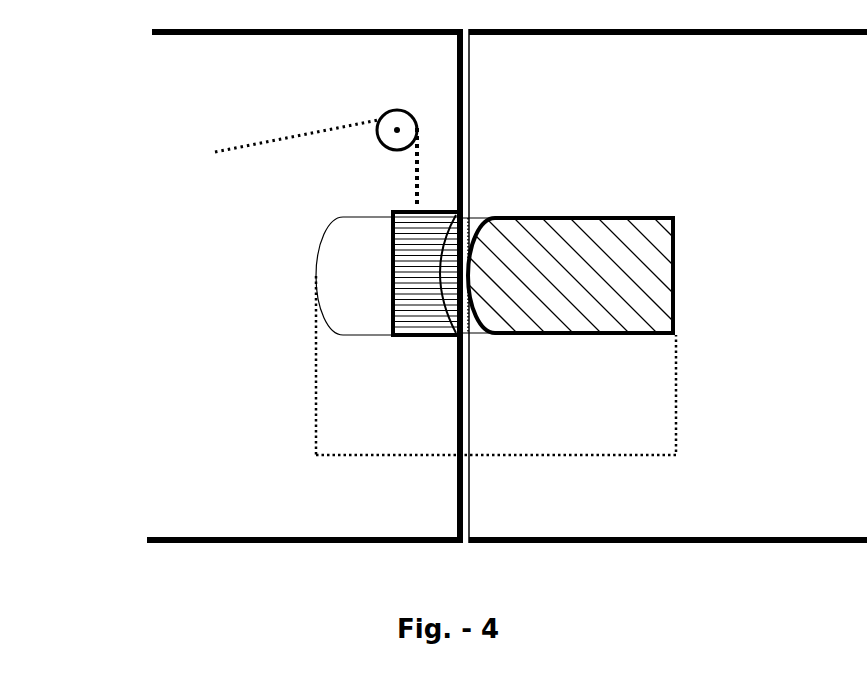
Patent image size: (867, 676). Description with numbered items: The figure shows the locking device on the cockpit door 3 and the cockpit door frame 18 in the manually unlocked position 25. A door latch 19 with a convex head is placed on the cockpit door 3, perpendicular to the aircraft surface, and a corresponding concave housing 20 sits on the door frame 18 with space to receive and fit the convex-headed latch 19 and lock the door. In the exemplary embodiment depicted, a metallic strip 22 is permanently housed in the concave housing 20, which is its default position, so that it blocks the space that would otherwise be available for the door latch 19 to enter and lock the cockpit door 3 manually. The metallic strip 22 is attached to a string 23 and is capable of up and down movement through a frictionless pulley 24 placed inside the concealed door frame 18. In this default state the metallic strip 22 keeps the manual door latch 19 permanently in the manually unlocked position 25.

The cockpit door 3 is at (668, 286).
The cockpit door frame 18 is at (234, 286).
The door latch 19 is at (603, 243).
The concave housing 20 is at (312, 269).
The metallic strip 22 is at (425, 312).
The string 23 is at (398, 176).
The frictionless pulley 24 is at (398, 106).
The manually unlocked position 25 is at (578, 472).